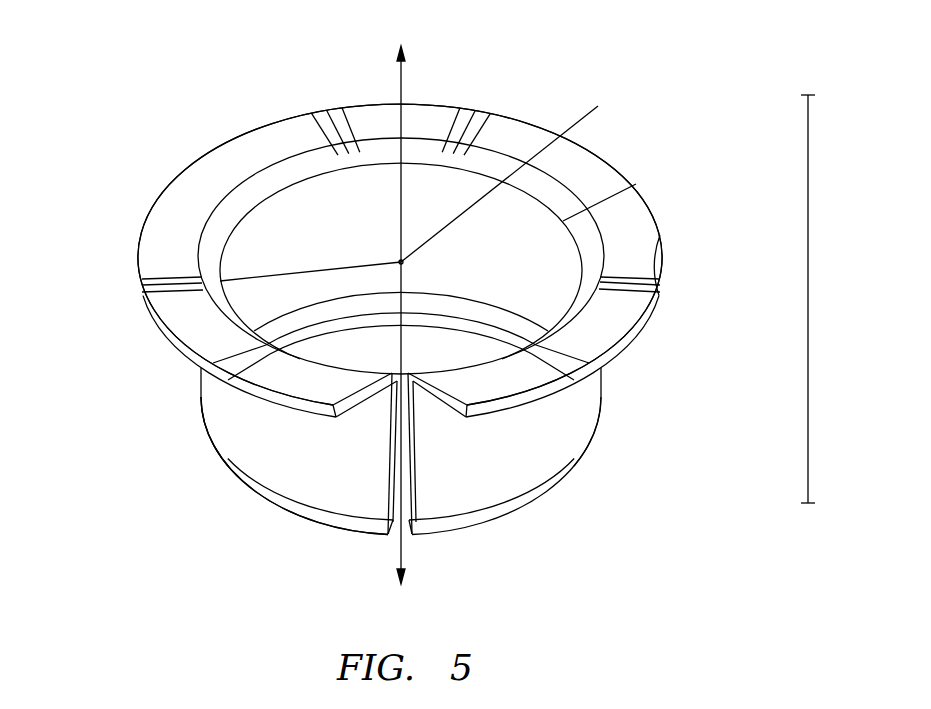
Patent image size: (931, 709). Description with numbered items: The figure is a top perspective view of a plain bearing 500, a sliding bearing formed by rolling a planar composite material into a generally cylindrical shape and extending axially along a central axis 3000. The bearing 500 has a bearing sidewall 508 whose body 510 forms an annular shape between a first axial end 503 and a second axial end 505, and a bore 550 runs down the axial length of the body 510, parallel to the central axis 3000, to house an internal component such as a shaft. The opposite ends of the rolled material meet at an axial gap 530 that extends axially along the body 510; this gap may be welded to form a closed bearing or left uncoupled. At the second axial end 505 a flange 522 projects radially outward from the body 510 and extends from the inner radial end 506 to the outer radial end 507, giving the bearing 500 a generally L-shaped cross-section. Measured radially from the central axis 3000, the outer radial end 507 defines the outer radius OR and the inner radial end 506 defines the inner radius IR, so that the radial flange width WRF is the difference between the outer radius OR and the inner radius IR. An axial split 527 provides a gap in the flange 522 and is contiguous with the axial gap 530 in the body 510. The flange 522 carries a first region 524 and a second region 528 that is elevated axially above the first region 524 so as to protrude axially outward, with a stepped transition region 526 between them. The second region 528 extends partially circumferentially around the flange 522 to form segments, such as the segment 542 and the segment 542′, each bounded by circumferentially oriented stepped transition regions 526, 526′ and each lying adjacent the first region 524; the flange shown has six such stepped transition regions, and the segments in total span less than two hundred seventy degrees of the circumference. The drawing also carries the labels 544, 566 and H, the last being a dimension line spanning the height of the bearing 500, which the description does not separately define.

The bearing 500 is at (678, 95).
The central axis 3000 is at (403, 68).
The flange 522 is at (158, 194).
The outer radial end 507 is at (663, 248).
The outer radius OR is at (418, 236).
The inner radius IR is at (287, 273).
The radial width of the flange WRF is at (636, 184).
The segment 542 is at (379, 104).
The second axial end 505 is at (342, 105).
The rib side edge 544 is at (318, 118).
The second region 528 is at (453, 88).
The stepped transition region 526 is at (486, 122).
The first region 524 is at (540, 152).
The stepped transition region 526′ is at (661, 288).
The segment 542′ is at (635, 338).
The axial split 527 is at (388, 370).
The axial gap 530 is at (407, 540).
The bore 550 is at (401, 326).
The inner radial end 506 is at (484, 336).
The body 510 is at (201, 385).
The bearing sidewall 508 is at (601, 392).
The first axial end 503 is at (523, 508).
The bottom chamfer 566 is at (580, 458).
The overall height H is at (809, 286).